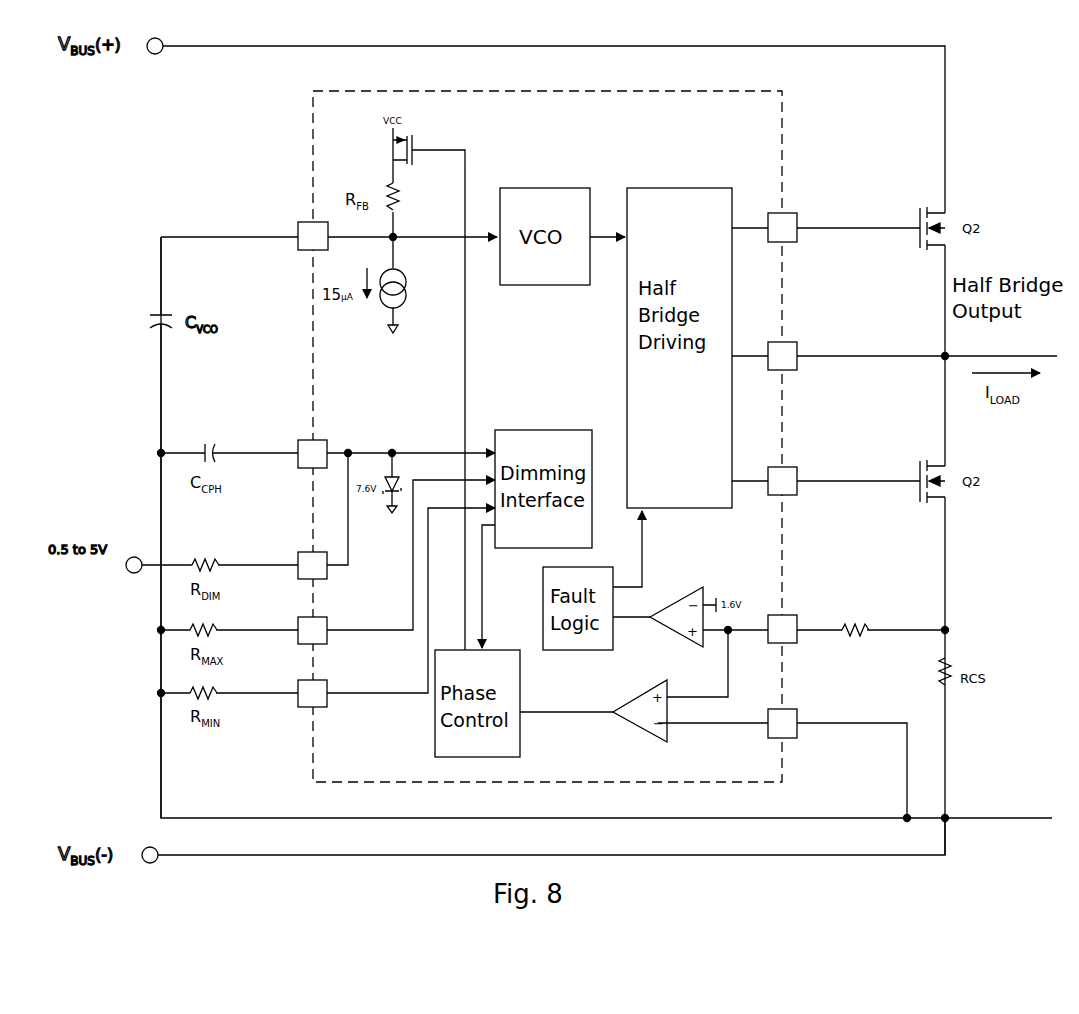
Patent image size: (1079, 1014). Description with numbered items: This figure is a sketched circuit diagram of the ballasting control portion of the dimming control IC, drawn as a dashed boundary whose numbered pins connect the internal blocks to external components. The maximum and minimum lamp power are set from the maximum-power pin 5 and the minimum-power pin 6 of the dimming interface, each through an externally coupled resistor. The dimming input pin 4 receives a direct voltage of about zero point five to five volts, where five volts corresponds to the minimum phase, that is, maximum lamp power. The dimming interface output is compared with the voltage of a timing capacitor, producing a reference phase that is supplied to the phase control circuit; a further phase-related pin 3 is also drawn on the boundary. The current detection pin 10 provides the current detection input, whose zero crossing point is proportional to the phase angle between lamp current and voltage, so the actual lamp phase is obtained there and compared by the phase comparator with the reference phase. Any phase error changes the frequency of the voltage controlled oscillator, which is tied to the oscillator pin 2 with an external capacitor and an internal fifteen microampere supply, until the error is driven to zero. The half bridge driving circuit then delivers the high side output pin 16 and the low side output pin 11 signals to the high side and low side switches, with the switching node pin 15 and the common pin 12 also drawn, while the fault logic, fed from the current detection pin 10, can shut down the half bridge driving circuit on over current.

The VCO pin 2 is at (244, 226).
The CPH pin 3 is at (244, 443).
The DIM pin 4 is at (226, 554).
The MAX pin 5 is at (244, 619).
The MIN pin 6 is at (244, 682).
The CS pin 10 is at (766, 618).
The LO pin 11 is at (780, 471).
The COM pin 12 is at (753, 712).
The VS pin 15 is at (780, 345).
The HO pin 16 is at (782, 217).